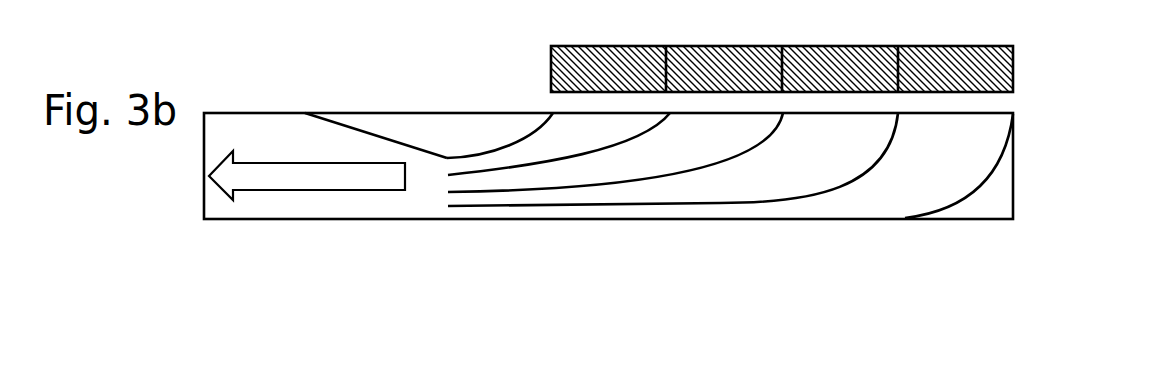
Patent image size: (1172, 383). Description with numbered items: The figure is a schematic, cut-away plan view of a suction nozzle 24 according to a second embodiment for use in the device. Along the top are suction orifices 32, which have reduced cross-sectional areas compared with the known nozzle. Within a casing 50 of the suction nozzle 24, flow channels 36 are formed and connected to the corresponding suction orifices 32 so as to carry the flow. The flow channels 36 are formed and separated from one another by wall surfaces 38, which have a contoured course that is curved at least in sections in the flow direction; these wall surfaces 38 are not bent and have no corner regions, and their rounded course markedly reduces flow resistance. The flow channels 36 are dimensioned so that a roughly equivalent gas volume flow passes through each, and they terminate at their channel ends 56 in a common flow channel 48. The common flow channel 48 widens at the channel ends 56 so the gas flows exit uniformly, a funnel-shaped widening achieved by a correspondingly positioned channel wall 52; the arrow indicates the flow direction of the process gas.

The suction nozzle 24 is at (343, 240).
The suction orifices 32 is at (596, 77).
The flow channels 36 is at (573, 146).
The wall surfaces 38 is at (760, 148).
The common flow channel 48 is at (281, 150).
The casing 50 is at (1013, 70).
The channel wall 52 is at (398, 142).
The channel ends 56 is at (424, 216).